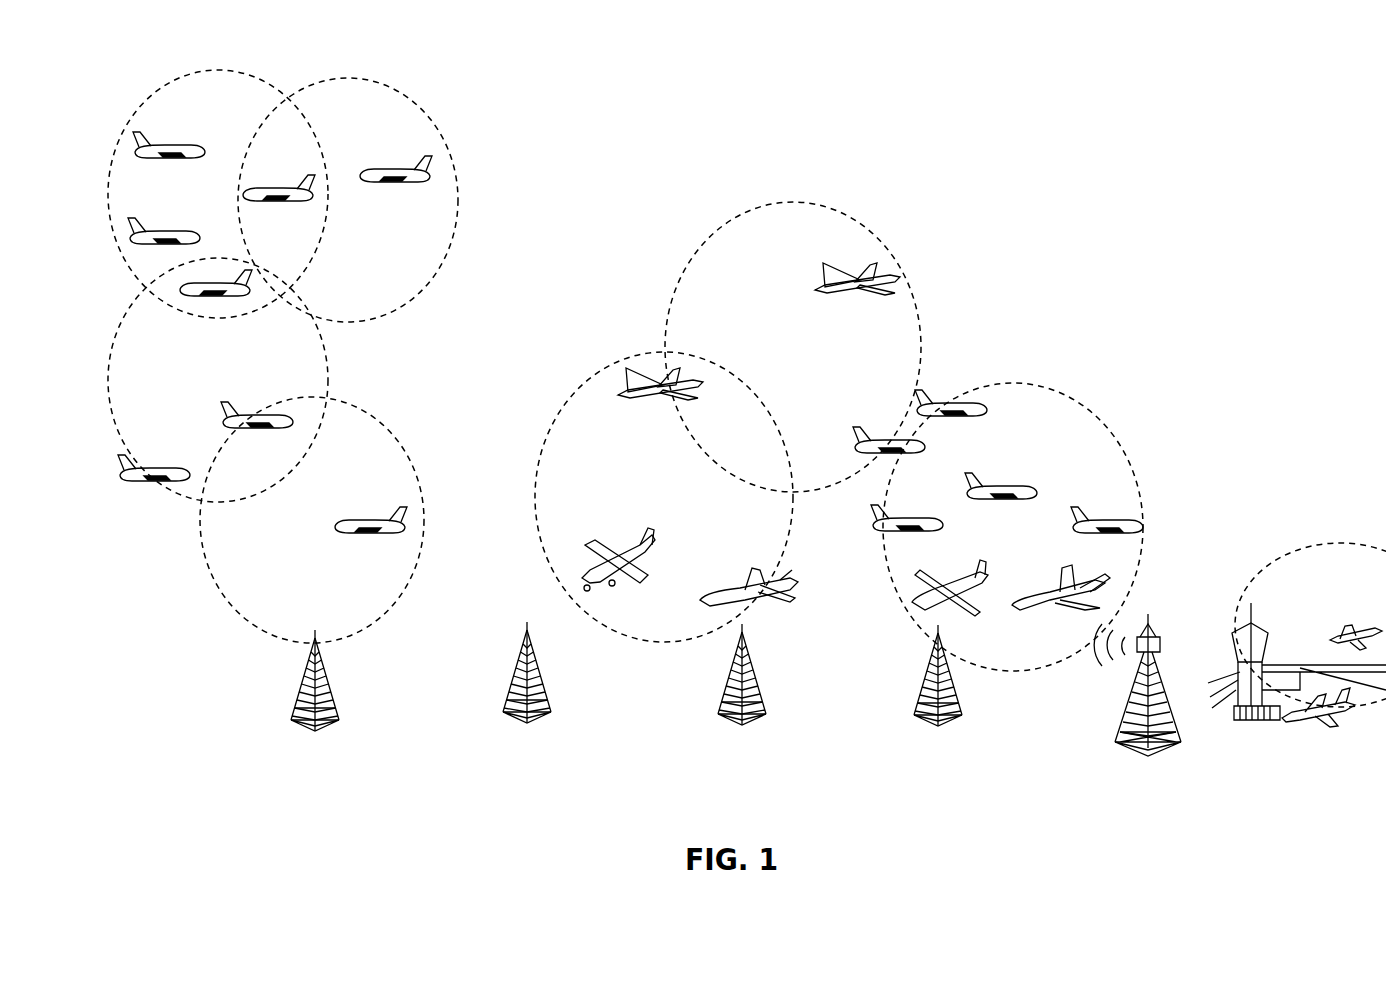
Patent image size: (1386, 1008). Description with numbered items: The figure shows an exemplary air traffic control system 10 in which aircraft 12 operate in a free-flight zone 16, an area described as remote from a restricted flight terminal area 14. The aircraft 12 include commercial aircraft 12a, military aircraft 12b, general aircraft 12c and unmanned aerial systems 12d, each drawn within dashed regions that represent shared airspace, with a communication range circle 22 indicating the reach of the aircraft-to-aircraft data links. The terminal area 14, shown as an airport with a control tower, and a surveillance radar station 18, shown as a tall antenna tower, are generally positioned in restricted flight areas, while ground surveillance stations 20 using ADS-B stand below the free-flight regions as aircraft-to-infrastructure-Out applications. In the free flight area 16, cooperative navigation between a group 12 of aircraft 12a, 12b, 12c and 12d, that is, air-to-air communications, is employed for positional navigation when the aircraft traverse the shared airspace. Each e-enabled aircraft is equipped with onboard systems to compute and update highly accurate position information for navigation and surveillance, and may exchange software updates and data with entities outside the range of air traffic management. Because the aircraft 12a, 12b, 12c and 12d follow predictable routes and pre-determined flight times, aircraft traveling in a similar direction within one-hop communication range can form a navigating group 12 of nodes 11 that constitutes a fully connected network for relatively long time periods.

The air traffic control system 10 is at (844, 122).
The nodes 11 is at (286, 204).
The aircraft 12 is at (958, 372).
The commercial aircraft 12a is at (263, 193).
The military aircraft 12b is at (885, 270).
The general aircraft 12c is at (590, 558).
The unmanned aerial system 12d is at (778, 600).
The restricted flight terminal area 14 is at (1296, 542).
The free-flight zone 16 is at (523, 372).
The surveillance radar station 18 is at (1152, 630).
The ground surveillance station 20 is at (328, 683).
The communication range circle 22 is at (805, 202).